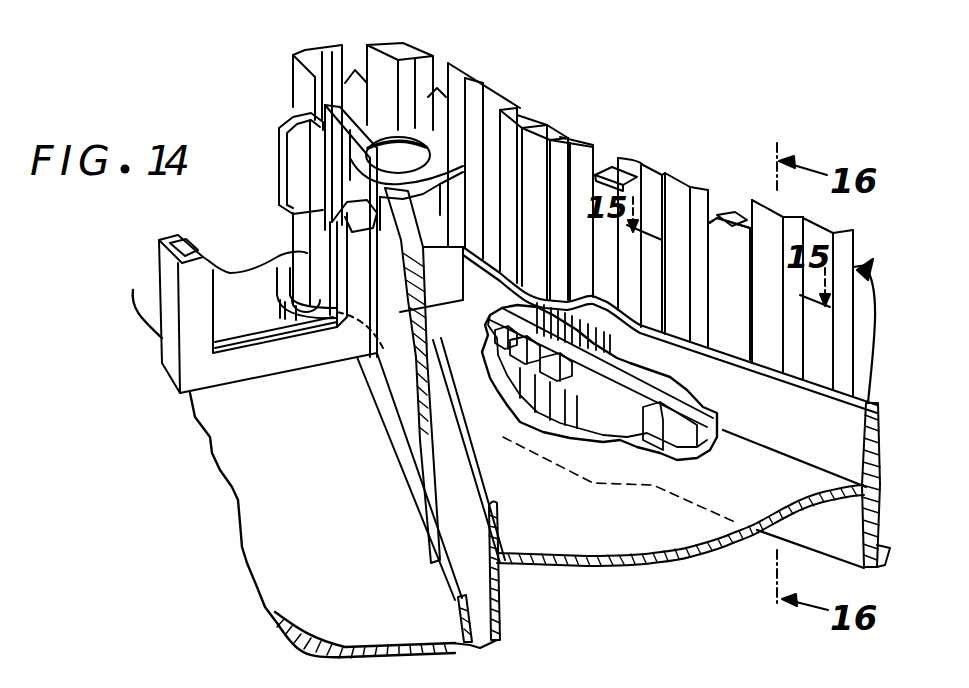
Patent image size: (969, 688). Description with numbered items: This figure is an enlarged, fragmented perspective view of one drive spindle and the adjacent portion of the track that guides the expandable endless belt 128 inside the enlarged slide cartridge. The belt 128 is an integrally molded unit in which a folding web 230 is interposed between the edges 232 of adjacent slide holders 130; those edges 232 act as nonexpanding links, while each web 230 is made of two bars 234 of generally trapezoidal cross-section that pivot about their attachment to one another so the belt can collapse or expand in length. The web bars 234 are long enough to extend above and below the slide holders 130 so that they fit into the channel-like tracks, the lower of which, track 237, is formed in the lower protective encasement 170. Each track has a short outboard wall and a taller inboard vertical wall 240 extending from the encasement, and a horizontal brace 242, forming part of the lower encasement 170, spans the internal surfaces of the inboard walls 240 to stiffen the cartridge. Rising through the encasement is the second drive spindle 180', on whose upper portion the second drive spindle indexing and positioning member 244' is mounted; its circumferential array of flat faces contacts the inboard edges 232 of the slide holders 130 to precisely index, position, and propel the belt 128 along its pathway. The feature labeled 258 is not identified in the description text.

The expandable endless belt 128 is at (583, 140).
The slide holder 130 is at (187, 368).
The lower protective encasement 170 is at (374, 610).
The second drive spindle 180' is at (432, 142).
The folding web 230 is at (515, 132).
The edge of slide holder 232 is at (750, 293).
The web bar 234 is at (673, 178).
The lower channel-like track 237 is at (478, 641).
The inboard vertical wall 240 is at (490, 600).
The horizontal brace 242 is at (660, 557).
The second drive spindle indexing and positioning member 244' is at (400, 72).
The rib 258 is at (460, 598).